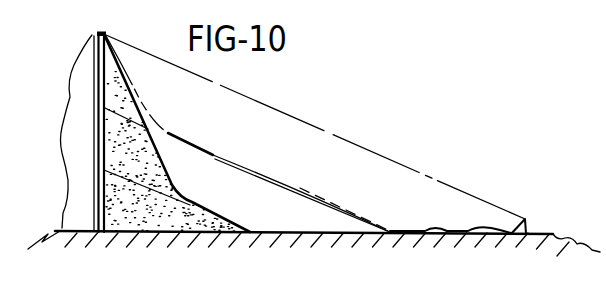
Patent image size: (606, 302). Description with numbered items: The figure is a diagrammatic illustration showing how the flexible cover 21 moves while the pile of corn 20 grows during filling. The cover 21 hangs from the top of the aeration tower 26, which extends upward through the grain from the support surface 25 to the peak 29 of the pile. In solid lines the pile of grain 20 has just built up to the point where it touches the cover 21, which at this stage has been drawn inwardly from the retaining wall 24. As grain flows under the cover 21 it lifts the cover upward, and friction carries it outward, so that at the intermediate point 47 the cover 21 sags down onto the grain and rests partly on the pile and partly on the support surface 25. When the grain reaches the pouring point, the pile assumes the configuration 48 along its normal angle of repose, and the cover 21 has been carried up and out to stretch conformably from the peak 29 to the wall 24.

The pile of corn 20 is at (117, 202).
The flexible cover 21 is at (200, 135).
The retaining wall 24 is at (530, 220).
The support surface 25 is at (318, 236).
The aeration tower 26 is at (95, 150).
The peak 29 is at (91, 34).
The intermediate point 47 is at (291, 195).
The pile configuration 48 is at (393, 143).